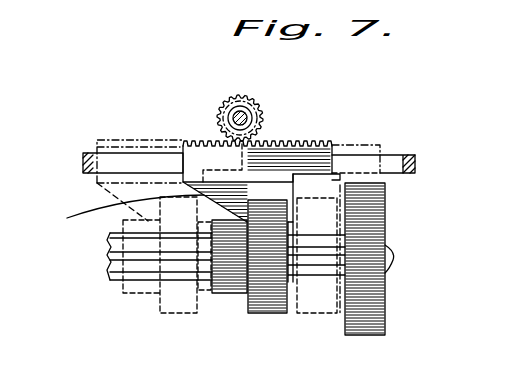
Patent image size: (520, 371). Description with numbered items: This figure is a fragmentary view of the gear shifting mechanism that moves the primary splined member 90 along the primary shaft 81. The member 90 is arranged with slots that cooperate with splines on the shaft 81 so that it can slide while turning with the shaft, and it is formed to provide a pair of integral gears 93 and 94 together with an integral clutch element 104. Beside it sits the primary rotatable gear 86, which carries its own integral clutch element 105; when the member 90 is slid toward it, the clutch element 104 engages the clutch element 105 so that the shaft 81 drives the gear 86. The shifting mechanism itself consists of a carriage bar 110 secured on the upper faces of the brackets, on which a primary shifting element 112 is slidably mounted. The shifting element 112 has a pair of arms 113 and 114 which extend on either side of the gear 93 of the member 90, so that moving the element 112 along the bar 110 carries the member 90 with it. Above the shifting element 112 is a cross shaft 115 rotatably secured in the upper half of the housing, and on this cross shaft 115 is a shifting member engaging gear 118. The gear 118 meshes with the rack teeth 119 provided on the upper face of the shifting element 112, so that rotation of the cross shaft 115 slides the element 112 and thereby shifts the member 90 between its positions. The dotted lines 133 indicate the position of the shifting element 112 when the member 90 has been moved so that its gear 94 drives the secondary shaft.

The primary shaft 81 is at (113, 265).
The primary rotatable gear 86 is at (367, 337).
The primary splined member 90 is at (212, 282).
The gear 93 is at (273, 314).
The gear 94 is at (223, 293).
The integral clutch element 104 is at (291, 272).
The integral clutch element 105 is at (338, 253).
The carriage bar 110 is at (110, 164).
The primary shifting element 112 is at (203, 160).
The arm 113 is at (68, 218).
The arm 114 is at (290, 210).
The cross shaft 115 is at (249, 112).
The shifting member engaging gear 118 is at (262, 116).
The rack teeth 119 is at (318, 143).
The dotted lines 133 is at (127, 150).